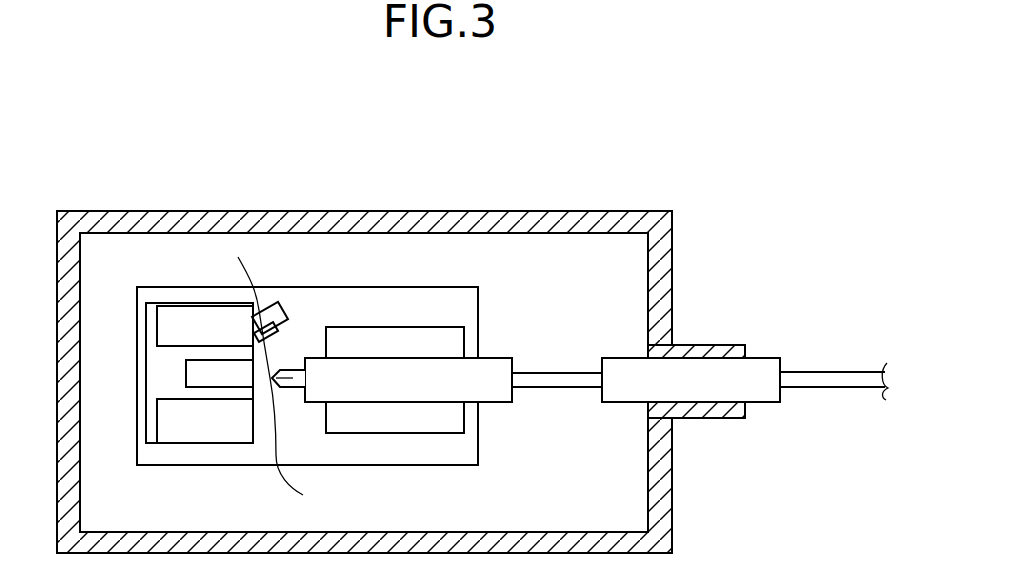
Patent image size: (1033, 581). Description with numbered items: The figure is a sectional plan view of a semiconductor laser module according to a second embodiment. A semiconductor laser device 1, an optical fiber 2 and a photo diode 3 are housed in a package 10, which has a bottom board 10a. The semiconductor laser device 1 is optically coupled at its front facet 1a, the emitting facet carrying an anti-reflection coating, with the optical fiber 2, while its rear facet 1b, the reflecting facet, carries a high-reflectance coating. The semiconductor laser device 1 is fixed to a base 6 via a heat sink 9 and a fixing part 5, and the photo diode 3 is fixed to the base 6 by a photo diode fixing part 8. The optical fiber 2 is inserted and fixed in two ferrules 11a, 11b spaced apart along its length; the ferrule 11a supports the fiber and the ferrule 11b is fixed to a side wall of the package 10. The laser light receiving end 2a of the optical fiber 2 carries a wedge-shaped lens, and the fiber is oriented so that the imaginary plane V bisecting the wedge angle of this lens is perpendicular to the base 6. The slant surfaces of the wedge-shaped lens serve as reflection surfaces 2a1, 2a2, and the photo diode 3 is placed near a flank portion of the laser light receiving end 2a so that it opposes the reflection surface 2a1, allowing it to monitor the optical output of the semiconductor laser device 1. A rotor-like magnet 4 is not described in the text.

The semiconductor laser device 1 is at (186, 360).
The front facet 1a is at (254, 372).
The rear facet 1b is at (185, 388).
The optical fiber 2 is at (560, 378).
The laser light receiving end 2a is at (278, 390).
The reflection surface 2a1 is at (229, 310).
The reflection surface 2a2 is at (308, 445).
The photo diode 3 is at (290, 331).
The rotor magnet 4 is at (467, 418).
The fixing part 5 is at (155, 378).
The base 6 is at (393, 448).
The photo diode fixing part 8 is at (272, 300).
The heat sink 9 is at (157, 325).
The package 10 is at (569, 211).
The bottom board 10a is at (615, 262).
The ferrule 11a is at (412, 368).
The ferrule 11b is at (703, 370).
The plane V is at (285, 366).